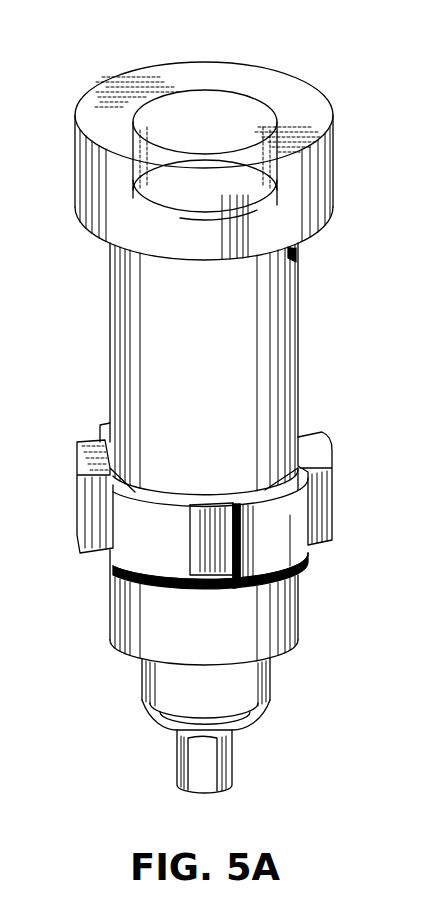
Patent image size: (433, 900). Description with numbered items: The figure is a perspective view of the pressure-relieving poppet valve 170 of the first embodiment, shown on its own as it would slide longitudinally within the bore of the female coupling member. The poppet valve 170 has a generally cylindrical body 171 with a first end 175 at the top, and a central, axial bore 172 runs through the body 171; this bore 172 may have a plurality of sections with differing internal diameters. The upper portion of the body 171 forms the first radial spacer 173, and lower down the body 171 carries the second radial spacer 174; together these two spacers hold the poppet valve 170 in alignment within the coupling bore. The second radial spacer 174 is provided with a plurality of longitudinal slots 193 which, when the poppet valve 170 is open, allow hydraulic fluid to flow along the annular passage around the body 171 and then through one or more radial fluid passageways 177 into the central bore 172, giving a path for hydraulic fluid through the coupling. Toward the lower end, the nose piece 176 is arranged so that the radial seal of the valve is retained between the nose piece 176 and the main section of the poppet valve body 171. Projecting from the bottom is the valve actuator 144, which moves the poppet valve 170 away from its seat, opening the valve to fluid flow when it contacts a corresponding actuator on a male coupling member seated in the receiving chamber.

The poppet valve 170 is at (146, 60).
The poppet valve body 171 is at (299, 358).
The central bore 172 is at (226, 108).
The first radial spacer 173 is at (337, 171).
The second radial spacer 174 is at (334, 497).
The first end 175 is at (304, 101).
The nose piece 176 is at (242, 718).
The radial fluid passageways 177 is at (300, 250).
The longitudinal slots 193 is at (96, 440).
The valve actuator 144 is at (177, 765).